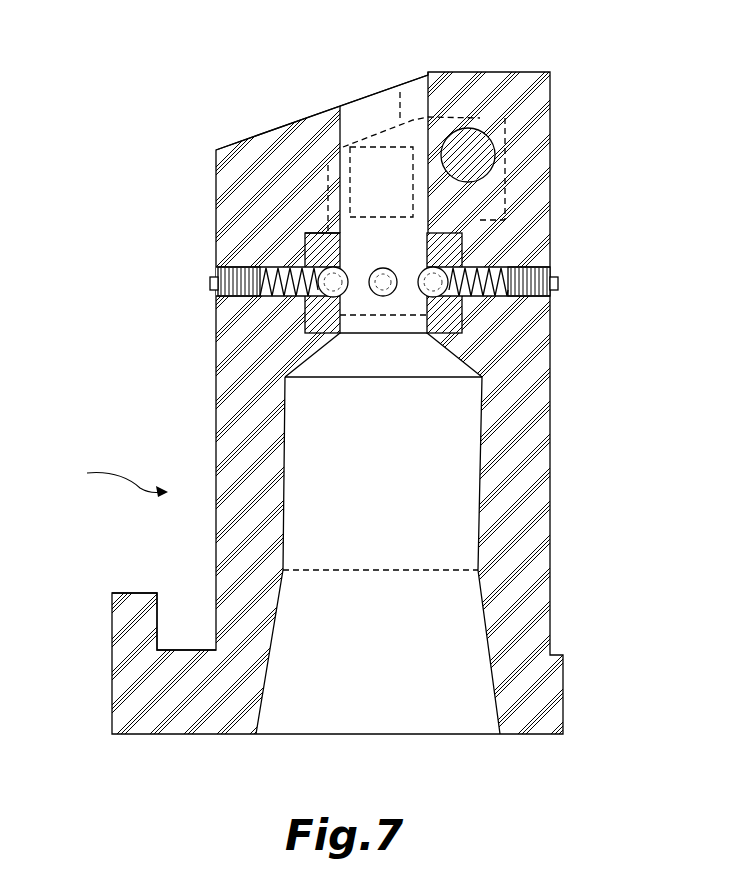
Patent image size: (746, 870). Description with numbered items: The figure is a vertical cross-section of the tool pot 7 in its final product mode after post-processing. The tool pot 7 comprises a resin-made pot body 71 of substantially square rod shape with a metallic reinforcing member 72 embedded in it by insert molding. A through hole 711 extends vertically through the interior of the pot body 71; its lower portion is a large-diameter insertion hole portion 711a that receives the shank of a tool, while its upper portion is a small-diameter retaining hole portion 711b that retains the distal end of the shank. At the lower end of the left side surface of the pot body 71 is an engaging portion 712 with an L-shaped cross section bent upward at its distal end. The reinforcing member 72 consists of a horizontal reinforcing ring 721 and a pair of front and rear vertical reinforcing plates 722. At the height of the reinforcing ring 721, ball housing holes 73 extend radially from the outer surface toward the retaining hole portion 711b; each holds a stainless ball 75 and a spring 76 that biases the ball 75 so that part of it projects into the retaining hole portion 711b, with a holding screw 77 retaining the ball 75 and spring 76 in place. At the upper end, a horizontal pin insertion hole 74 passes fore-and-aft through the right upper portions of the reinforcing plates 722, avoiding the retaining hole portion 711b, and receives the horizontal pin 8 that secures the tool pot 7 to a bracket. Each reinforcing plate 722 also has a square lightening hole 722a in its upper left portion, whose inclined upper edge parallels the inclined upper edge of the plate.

The tool pot 7 is at (88, 491).
The pot body 71 is at (552, 398).
The through hole 711 is at (472, 476).
The insertion hole portion 711a is at (474, 600).
The retaining hole portion 711b is at (427, 200).
The engaging portion 712 is at (127, 617).
The reinforcing member 72 is at (308, 238).
The reinforcing ring 721 is at (336, 335).
The reinforcing plates 722 is at (398, 100).
The lightening hole 722a is at (380, 165).
The ball housing hole 73 is at (322, 315).
The horizontal pin insertion hole 74 is at (482, 132).
The ball 75 is at (347, 295).
The spring 76 is at (255, 268).
The holding screw 77 is at (212, 286).
The horizontal pin 8 is at (478, 158).